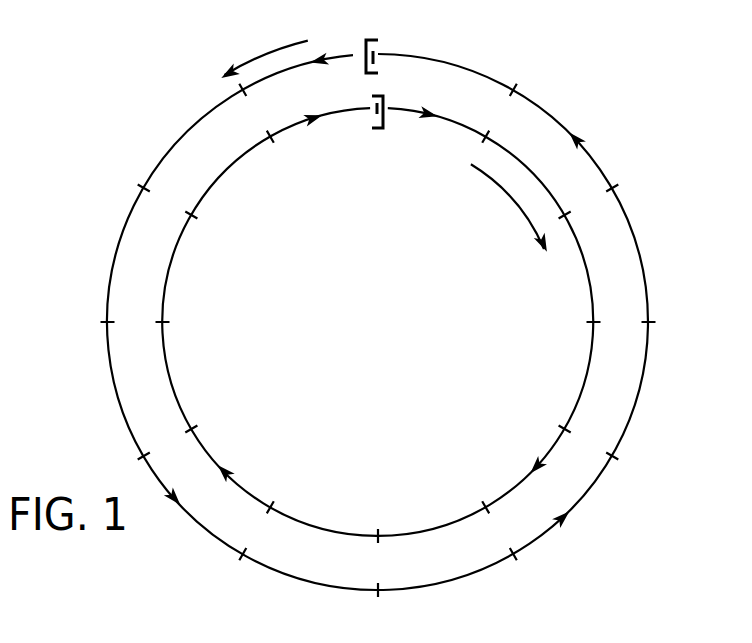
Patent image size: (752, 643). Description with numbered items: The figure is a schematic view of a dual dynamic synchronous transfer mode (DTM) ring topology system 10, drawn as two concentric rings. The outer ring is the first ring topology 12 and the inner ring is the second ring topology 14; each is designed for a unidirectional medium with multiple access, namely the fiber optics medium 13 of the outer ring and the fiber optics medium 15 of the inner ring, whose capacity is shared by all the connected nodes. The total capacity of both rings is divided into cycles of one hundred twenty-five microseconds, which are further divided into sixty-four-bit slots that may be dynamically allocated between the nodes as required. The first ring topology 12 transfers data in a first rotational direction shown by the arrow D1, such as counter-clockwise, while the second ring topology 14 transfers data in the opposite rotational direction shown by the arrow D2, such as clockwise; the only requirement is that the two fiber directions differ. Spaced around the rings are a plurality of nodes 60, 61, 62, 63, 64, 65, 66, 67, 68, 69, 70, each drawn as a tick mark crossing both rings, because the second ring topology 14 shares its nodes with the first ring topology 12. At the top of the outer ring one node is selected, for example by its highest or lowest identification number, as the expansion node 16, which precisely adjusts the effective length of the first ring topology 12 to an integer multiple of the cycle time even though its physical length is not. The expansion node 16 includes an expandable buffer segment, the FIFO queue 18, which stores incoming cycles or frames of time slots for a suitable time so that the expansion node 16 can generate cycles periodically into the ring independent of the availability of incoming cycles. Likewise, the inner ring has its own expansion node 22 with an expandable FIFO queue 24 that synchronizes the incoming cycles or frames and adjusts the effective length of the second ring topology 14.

The dynamic synchronous transfer mode (DTM) ring topology system 10 is at (598, 158).
The first ring topology 12 is at (195, 122).
The fiber optics medium 13 is at (128, 212).
The second ring topology 14 is at (232, 165).
The fiber optics medium 15 is at (175, 253).
The expansion node 16 is at (363, 40).
The FIFO queue 18 is at (374, 55).
The expansion node 22 is at (385, 121).
The FIFO queue 24 is at (378, 108).
The node 60 is at (256, 113).
The node 61 is at (168, 202).
The node 62 is at (135, 323).
The node 63 is at (168, 443).
The node 64 is at (256, 530).
The node 65 is at (377, 563).
The node 66 is at (499, 530).
The node 67 is at (589, 443).
The node 68 is at (621, 325).
The node 69 is at (589, 203).
The node 70 is at (499, 113).
The arrow D1 is at (265, 54).
The arrow D2 is at (508, 193).